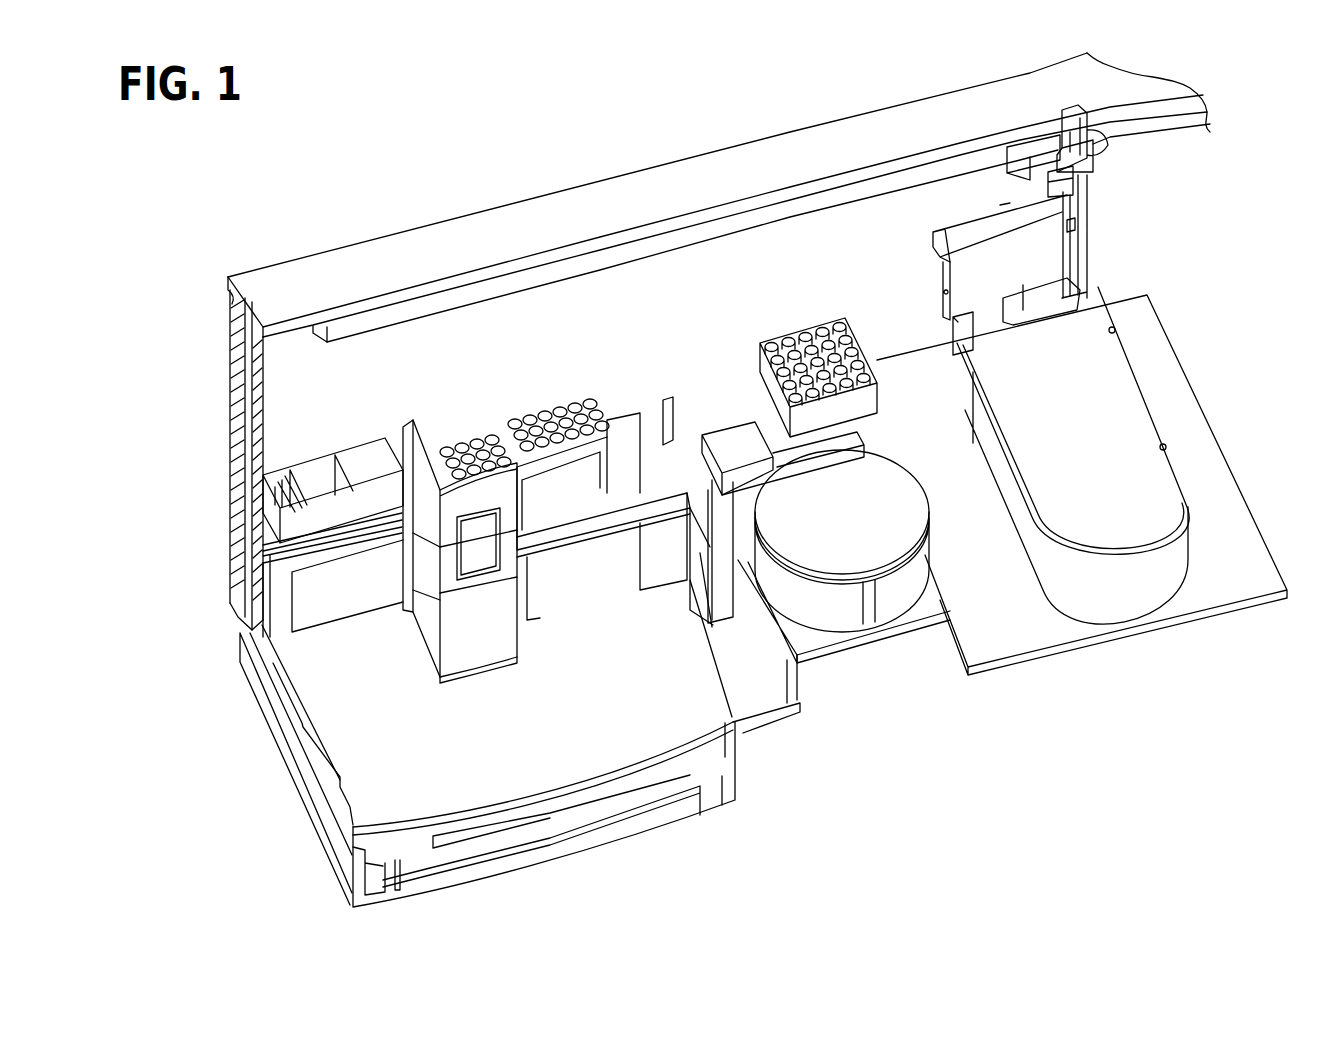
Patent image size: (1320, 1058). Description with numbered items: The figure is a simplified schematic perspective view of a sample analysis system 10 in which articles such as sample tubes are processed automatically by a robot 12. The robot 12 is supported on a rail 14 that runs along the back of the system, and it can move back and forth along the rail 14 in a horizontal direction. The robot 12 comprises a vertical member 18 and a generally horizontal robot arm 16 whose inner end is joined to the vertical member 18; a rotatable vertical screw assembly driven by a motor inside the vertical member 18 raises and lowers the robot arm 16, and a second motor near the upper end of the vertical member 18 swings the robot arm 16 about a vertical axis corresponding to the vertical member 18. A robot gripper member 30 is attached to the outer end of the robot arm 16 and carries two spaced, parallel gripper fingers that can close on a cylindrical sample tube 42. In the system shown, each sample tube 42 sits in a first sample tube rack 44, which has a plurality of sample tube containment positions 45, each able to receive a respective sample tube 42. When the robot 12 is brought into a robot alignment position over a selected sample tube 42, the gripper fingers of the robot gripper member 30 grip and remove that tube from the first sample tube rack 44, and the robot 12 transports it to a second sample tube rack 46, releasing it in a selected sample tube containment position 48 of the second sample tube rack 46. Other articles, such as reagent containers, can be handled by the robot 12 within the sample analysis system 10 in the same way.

The sample analysis system 10 is at (424, 193).
The robot 12 is at (1098, 180).
The rail 14 is at (528, 210).
The robot arm 16 is at (996, 215).
The vertical member 18 is at (1090, 218).
The robot gripper member 30 is at (935, 292).
The sample tube 42 is at (518, 428).
The first sample tube rack 44 is at (547, 473).
The sample tube containment positions 45 is at (580, 418).
The second sample tube rack 46 is at (765, 380).
The sample tube containment position 48 is at (778, 326).